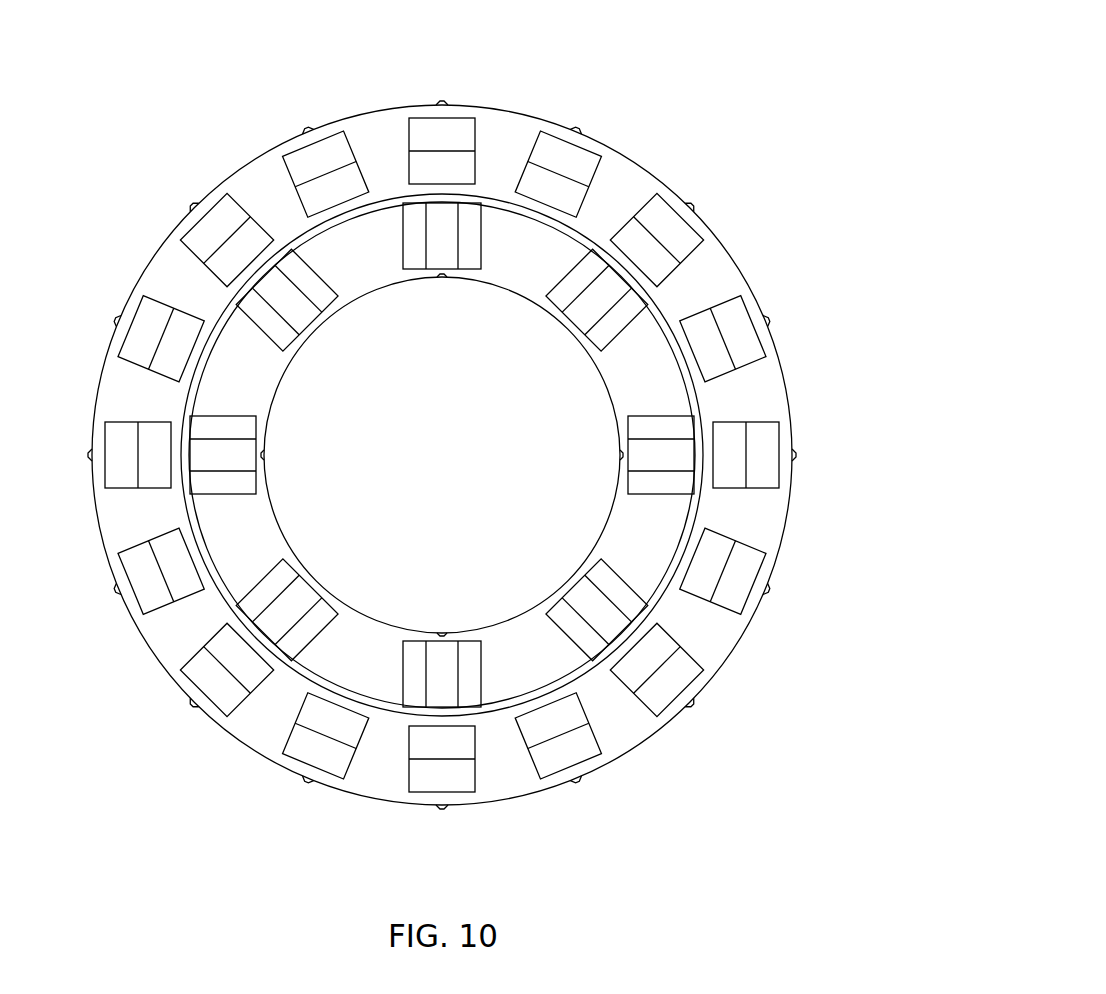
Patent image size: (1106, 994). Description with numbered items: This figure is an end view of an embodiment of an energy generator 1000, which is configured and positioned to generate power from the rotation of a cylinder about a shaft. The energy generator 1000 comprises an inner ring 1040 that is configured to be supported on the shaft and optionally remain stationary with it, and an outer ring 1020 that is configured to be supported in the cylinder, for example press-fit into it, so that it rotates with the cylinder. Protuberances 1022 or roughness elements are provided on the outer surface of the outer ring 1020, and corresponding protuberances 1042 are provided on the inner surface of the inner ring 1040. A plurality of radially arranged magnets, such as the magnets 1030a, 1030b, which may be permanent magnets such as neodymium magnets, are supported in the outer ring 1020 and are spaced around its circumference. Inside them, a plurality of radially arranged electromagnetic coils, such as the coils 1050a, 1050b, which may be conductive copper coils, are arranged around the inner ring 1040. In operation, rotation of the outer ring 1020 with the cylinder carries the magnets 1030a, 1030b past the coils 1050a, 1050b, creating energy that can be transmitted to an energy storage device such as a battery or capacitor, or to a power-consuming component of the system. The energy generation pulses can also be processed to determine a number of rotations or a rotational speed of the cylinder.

The energy generator 1000 is at (1058, 129).
The outer ring 1020 is at (630, 158).
The protuberances 1022 is at (575, 133).
The magnet 1030a is at (238, 211).
The magnet 1030b is at (362, 178).
The inner ring 1040 is at (277, 530).
The protuberances 1042 is at (315, 328).
The electromagnetic coil 1050a is at (457, 245).
The electromagnetic coil 1050b is at (663, 500).